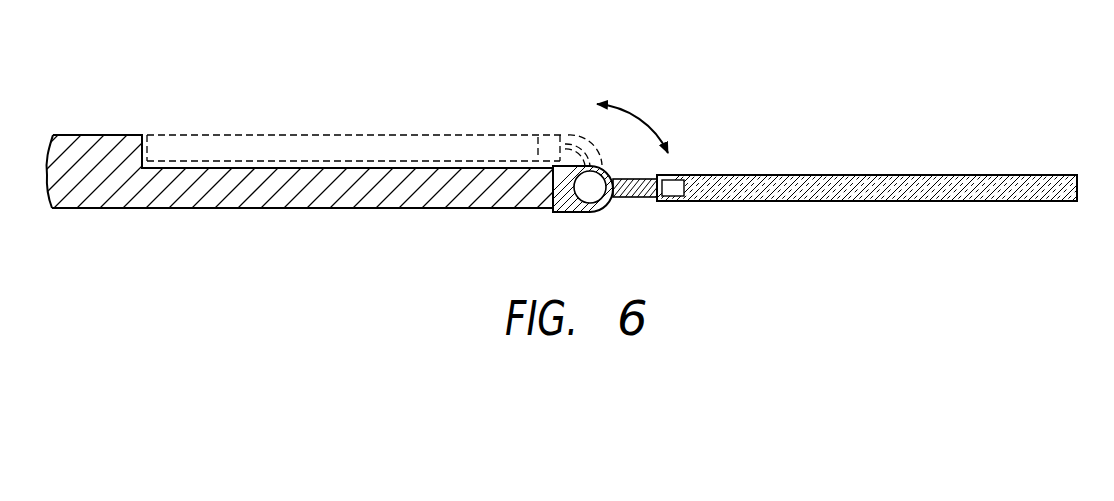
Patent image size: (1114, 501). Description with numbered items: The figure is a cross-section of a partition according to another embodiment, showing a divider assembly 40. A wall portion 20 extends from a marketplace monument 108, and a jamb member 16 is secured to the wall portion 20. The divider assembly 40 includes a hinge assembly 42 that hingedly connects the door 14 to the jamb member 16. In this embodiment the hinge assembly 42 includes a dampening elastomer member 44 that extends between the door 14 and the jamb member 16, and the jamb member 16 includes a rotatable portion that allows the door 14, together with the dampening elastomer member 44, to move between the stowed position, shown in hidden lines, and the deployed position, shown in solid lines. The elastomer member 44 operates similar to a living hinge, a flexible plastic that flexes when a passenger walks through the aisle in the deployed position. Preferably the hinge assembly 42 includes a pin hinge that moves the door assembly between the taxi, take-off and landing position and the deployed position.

The marketplace monument 108 is at (98, 198).
The wall portion 20 is at (320, 197).
The jamb member 16 is at (592, 212).
The dampening elastomer member 44 is at (635, 200).
The door 14 is at (862, 198).
The divider assembly 40 is at (728, 93).
The hinge assembly 42 is at (664, 226).